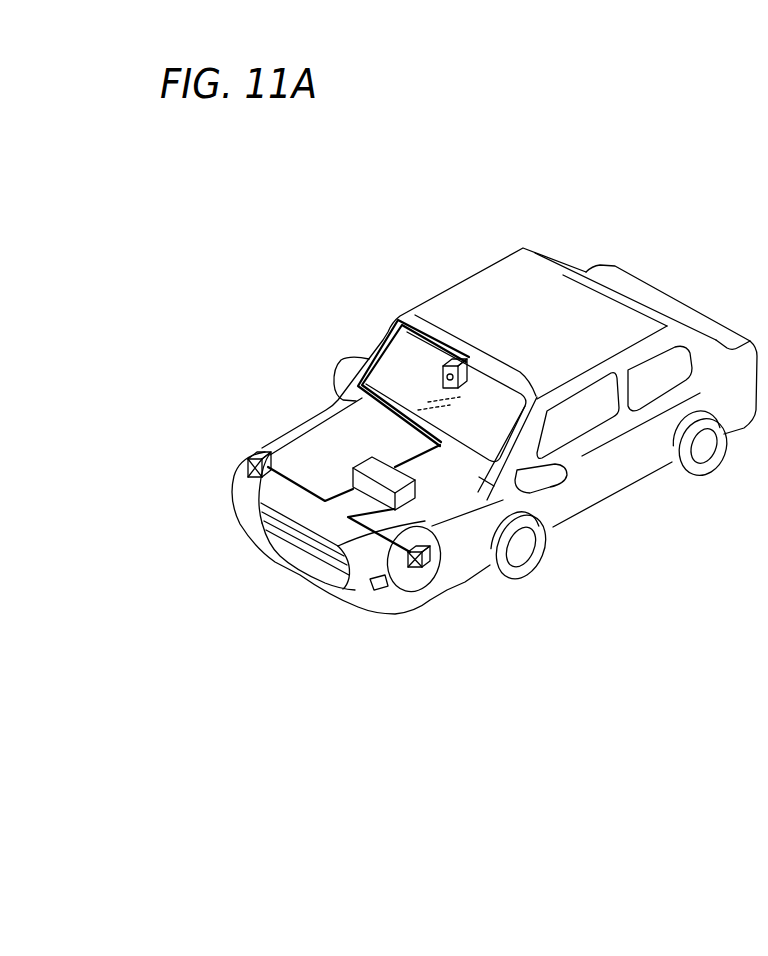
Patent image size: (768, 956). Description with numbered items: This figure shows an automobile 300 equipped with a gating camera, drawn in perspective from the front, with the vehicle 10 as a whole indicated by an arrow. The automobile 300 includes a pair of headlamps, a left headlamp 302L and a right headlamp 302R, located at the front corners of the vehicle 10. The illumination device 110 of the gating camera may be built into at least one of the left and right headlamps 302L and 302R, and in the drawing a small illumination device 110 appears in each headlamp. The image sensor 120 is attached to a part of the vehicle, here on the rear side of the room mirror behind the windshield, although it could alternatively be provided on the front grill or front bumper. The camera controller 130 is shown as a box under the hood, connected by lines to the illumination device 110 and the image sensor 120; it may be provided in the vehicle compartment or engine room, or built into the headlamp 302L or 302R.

The automobile 300 is at (620, 201).
The vehicle 10 is at (240, 340).
The illumination device 110 is at (252, 452).
The image sensor 120 is at (473, 367).
The camera controller 130 is at (400, 467).
The right headlamp 302R is at (233, 478).
The left headlamp 302L is at (435, 592).